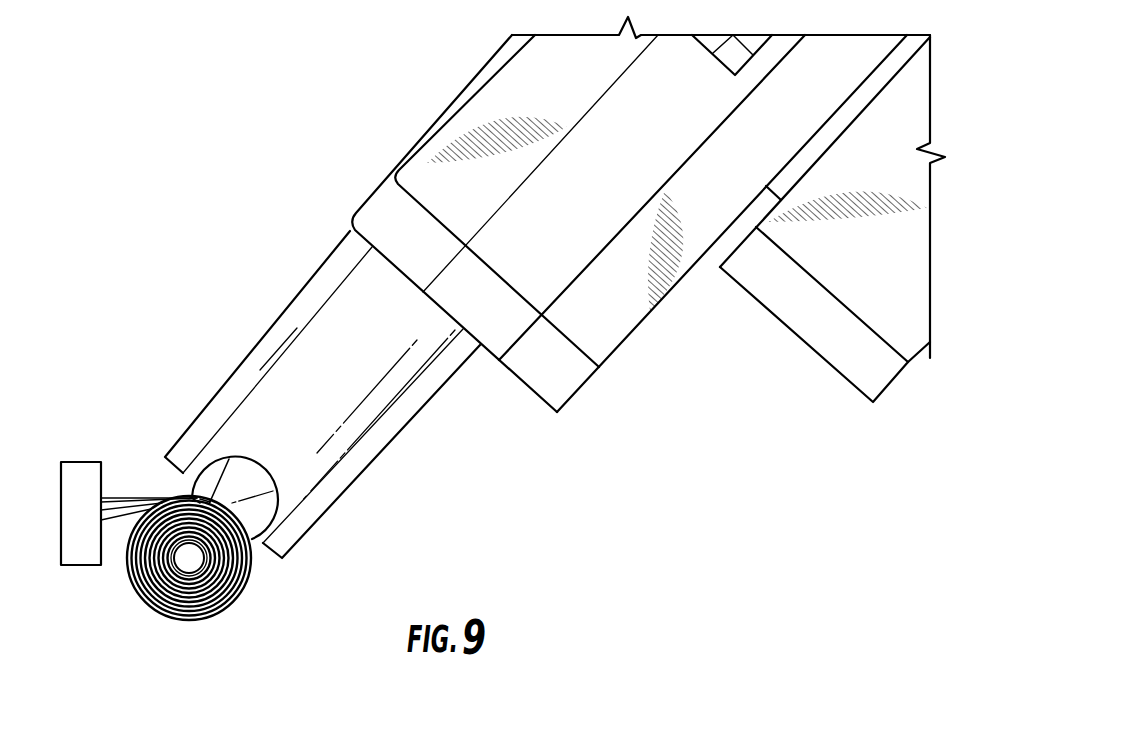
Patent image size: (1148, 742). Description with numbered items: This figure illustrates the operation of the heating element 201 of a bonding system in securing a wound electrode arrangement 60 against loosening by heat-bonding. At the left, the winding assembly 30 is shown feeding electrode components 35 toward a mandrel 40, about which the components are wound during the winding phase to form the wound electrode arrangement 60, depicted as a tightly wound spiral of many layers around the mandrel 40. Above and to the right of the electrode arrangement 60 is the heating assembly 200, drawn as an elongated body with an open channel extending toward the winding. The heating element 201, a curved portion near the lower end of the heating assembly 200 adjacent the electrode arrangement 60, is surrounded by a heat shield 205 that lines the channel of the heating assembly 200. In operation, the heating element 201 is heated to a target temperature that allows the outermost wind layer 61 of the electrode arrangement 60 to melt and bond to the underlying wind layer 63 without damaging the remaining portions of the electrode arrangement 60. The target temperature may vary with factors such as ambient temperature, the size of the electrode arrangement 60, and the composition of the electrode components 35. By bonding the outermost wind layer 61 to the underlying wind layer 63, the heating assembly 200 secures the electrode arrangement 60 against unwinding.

The heating assembly 200 is at (266, 190).
The heat shield 205 is at (338, 452).
The heating element 201 is at (252, 493).
The wound electrode arrangement 60 is at (243, 612).
The mandrel 40 is at (186, 578).
The winding assembly 30 is at (91, 446).
The electrode components 35 is at (122, 535).
The outermost wind layer 61 is at (205, 500).
The underlying wind layer 63 is at (200, 503).